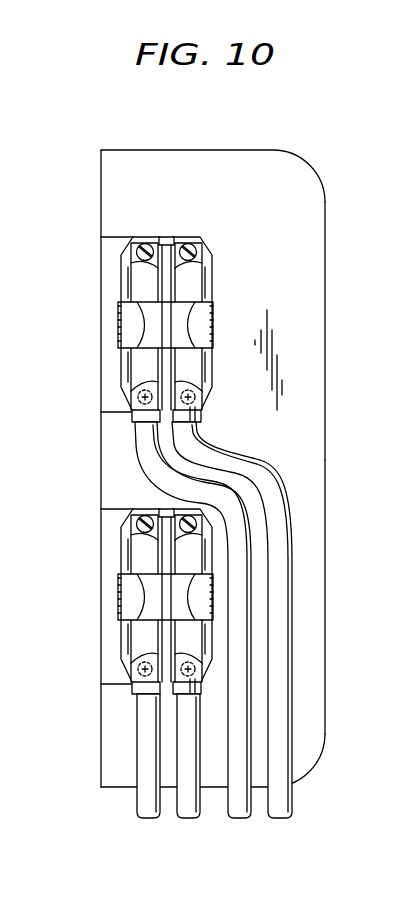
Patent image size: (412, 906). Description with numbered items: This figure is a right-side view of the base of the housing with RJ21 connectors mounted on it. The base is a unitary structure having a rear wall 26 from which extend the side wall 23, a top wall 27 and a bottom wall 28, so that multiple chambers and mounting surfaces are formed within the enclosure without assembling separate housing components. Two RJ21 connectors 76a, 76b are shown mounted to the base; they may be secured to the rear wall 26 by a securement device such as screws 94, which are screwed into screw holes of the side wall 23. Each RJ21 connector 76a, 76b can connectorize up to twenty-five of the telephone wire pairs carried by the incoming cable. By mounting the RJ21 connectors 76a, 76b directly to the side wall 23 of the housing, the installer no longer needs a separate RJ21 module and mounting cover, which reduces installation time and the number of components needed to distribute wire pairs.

The top wall 27 is at (222, 150).
The side wall 23 is at (305, 380).
The rear wall 26 is at (325, 463).
The bottom wall 28 is at (312, 768).
The screws 94 is at (187, 240).
The RJ21 connector 76a is at (143, 278).
The RJ21 connector 76b is at (187, 287).